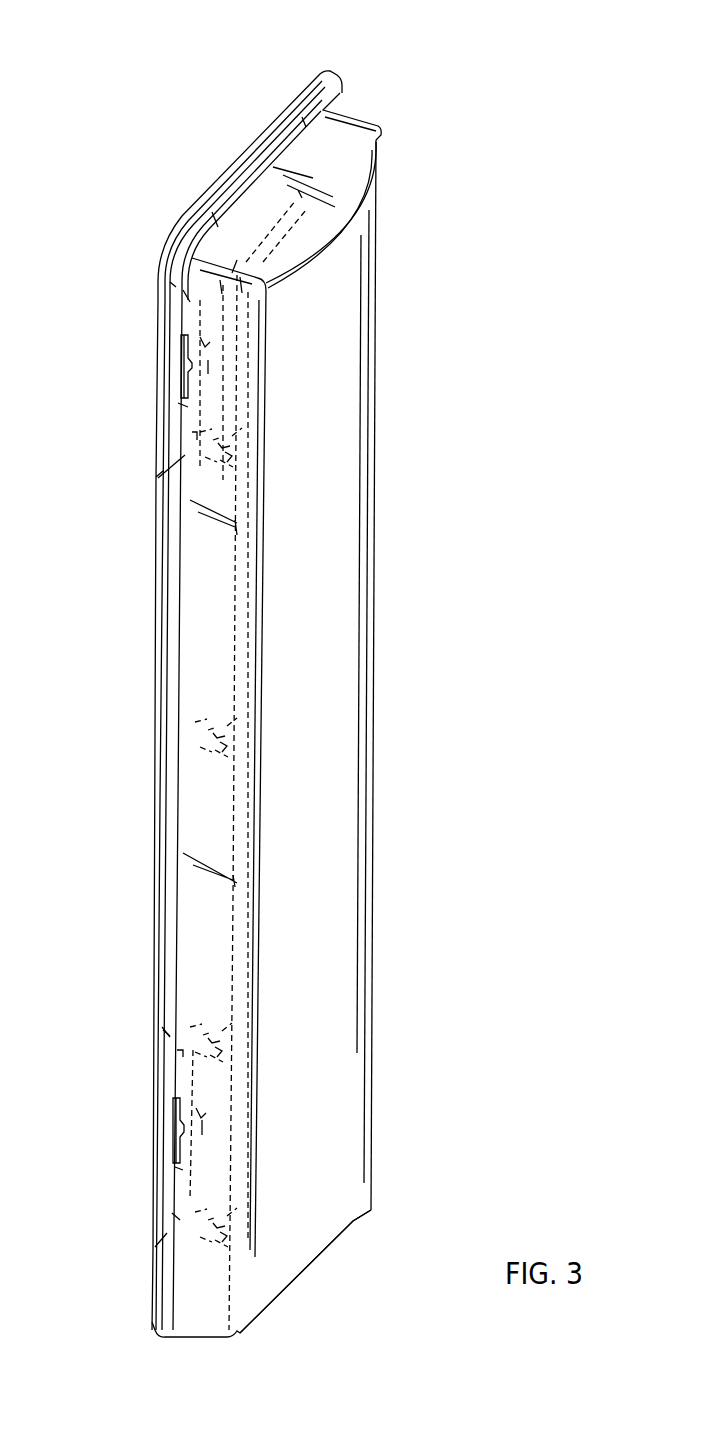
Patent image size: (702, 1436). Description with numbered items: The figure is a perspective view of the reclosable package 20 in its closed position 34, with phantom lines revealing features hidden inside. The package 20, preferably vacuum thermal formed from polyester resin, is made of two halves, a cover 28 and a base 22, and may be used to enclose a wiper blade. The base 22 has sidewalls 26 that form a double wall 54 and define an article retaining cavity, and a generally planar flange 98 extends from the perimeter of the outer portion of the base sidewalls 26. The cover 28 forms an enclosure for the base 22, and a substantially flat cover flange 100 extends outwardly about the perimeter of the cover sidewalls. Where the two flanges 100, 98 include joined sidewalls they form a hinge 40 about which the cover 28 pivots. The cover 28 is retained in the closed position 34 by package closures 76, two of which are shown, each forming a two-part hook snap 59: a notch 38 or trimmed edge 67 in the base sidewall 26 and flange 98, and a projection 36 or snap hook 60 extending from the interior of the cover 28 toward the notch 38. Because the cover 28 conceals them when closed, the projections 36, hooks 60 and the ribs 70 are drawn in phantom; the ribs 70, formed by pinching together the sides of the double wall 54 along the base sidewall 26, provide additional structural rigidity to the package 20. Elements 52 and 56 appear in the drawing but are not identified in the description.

The reclosable package 20 is at (440, 947).
The base 22 is at (148, 547).
The sidewalls 26 is at (242, 835).
The cover 28 is at (313, 1240).
The closed position 34 is at (473, 548).
The projection 36 is at (208, 367).
The notch 38 is at (194, 436).
The hinge 40 is at (330, 75).
The hook 52 is at (217, 440).
The double wall 54 is at (237, 640).
The catch 56 is at (217, 457).
The hook snap 59 is at (172, 331).
The snap hook 60 is at (207, 347).
The trimmed edge 67 is at (172, 282).
The ribs 70 is at (244, 428).
The package closures 76 is at (118, 363).
The flange 98 is at (194, 203).
The cover flange 100 is at (333, 100).